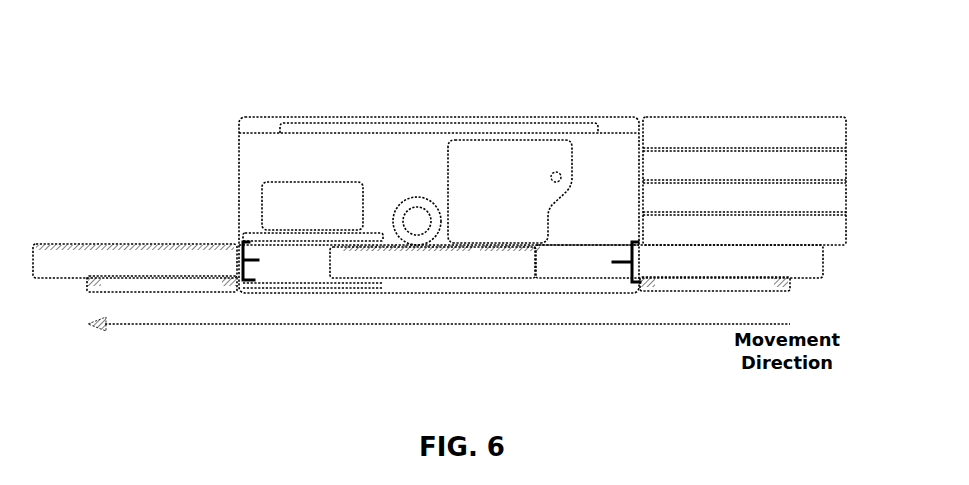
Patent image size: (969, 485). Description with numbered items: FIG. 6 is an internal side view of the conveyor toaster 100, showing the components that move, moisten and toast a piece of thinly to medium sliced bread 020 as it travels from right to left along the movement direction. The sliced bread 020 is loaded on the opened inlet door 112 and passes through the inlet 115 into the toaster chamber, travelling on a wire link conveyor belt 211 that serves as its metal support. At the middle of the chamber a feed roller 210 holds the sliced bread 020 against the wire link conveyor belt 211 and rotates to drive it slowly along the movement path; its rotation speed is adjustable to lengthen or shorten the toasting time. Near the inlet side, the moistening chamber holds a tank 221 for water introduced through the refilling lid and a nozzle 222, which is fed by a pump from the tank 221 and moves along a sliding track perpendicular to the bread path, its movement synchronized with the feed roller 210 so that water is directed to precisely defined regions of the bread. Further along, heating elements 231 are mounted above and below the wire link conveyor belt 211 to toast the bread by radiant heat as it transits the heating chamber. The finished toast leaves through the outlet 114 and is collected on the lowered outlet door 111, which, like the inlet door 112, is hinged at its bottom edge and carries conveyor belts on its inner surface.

The conveyor toaster 100 is at (336, 90).
The thinly to medium sliced bread 020 is at (772, 118).
The feed roller 210 is at (415, 222).
The tank 221 is at (315, 208).
The nozzle 222 is at (497, 216).
The heating element 231 is at (345, 237).
The wire link conveyor belt 211 is at (563, 281).
The outlet door 111 is at (175, 290).
The inlet door 112 is at (693, 288).
The outlet 114 is at (258, 262).
The inlet 115 is at (613, 262).